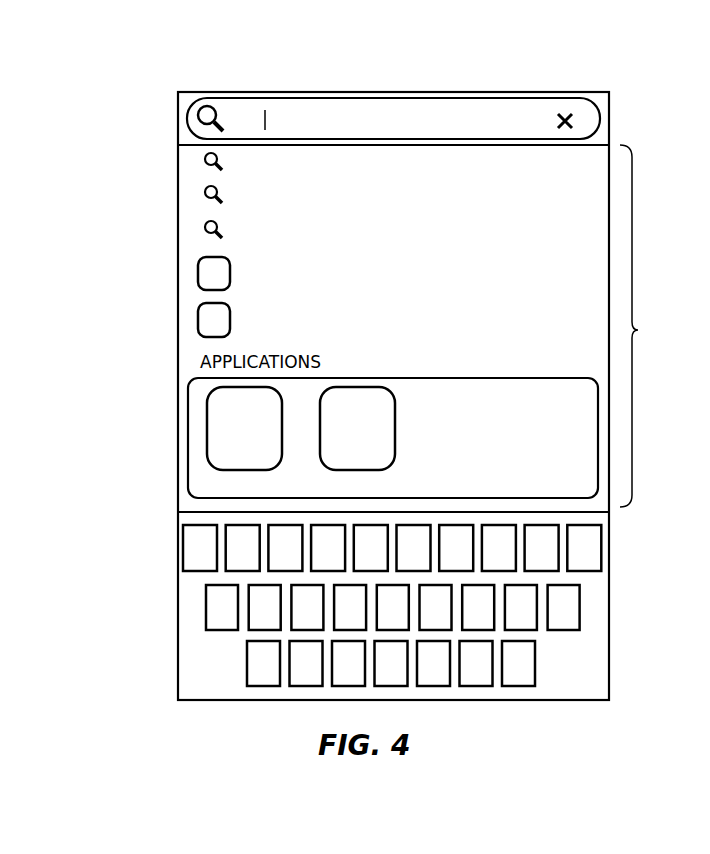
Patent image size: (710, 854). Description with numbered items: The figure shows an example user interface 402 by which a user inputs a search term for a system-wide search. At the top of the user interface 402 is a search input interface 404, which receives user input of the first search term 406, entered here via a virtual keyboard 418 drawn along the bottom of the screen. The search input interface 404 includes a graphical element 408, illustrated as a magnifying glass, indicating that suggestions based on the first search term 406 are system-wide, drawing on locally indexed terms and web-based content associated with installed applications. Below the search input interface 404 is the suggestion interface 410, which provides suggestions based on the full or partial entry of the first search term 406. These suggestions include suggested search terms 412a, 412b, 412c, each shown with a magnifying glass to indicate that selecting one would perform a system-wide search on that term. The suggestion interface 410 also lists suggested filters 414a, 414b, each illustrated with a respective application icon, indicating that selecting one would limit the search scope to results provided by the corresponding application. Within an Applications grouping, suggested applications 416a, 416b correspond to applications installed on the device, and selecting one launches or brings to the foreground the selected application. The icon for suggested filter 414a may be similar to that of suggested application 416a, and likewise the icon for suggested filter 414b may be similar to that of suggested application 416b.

The user interface 402 is at (600, 92).
The search input interface 404 is at (410, 97).
The first search term 406 is at (251, 106).
The graphical element 408 is at (197, 121).
The suggestion interface 410 is at (648, 326).
The suggested search term 412a is at (204, 165).
The suggested search term 412b is at (204, 198).
The suggested search term 412c is at (204, 231).
The suggested filter 414a is at (198, 277).
The suggested filter 414b is at (198, 325).
The suggested application 416a is at (207, 442).
The suggested application 416b is at (376, 387).
The virtual keyboard 418 is at (558, 662).